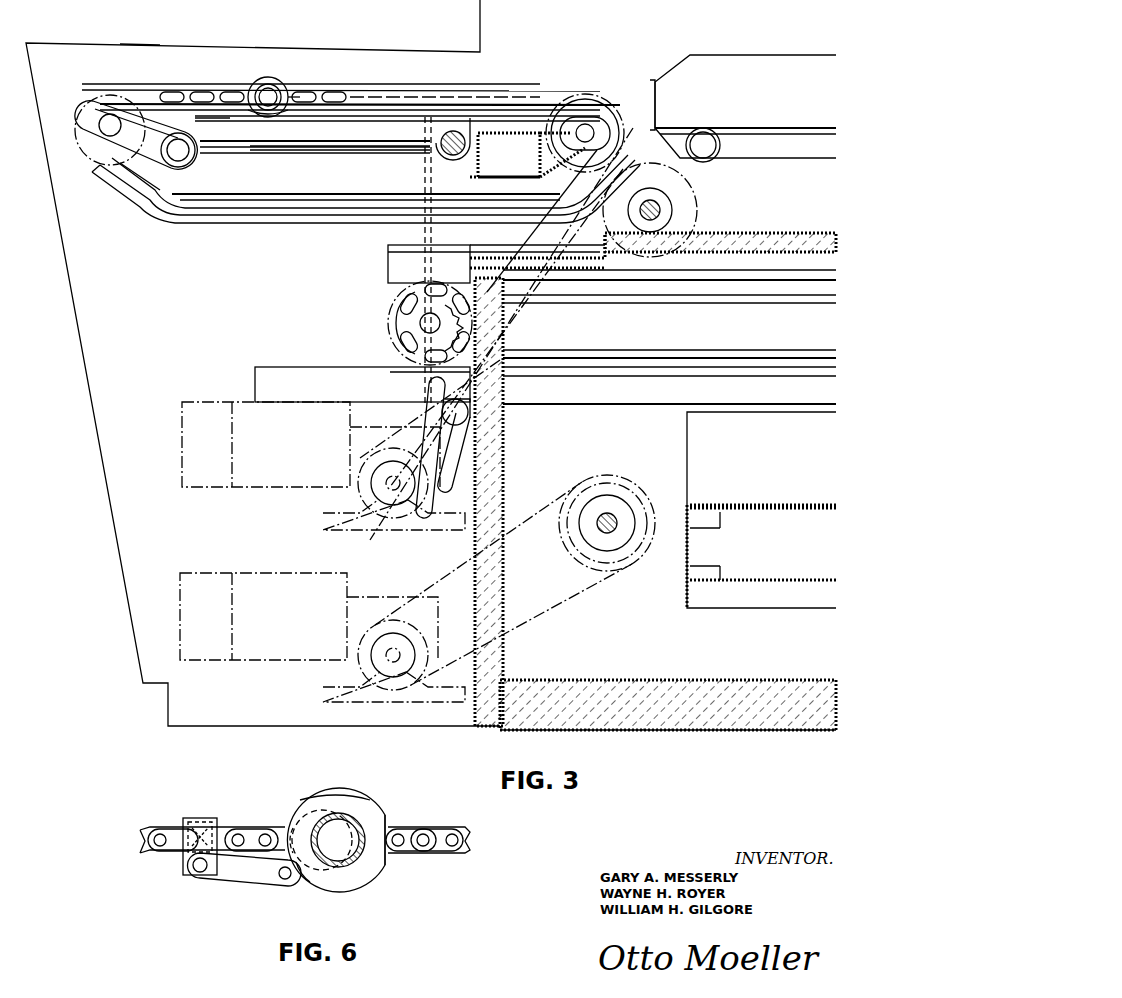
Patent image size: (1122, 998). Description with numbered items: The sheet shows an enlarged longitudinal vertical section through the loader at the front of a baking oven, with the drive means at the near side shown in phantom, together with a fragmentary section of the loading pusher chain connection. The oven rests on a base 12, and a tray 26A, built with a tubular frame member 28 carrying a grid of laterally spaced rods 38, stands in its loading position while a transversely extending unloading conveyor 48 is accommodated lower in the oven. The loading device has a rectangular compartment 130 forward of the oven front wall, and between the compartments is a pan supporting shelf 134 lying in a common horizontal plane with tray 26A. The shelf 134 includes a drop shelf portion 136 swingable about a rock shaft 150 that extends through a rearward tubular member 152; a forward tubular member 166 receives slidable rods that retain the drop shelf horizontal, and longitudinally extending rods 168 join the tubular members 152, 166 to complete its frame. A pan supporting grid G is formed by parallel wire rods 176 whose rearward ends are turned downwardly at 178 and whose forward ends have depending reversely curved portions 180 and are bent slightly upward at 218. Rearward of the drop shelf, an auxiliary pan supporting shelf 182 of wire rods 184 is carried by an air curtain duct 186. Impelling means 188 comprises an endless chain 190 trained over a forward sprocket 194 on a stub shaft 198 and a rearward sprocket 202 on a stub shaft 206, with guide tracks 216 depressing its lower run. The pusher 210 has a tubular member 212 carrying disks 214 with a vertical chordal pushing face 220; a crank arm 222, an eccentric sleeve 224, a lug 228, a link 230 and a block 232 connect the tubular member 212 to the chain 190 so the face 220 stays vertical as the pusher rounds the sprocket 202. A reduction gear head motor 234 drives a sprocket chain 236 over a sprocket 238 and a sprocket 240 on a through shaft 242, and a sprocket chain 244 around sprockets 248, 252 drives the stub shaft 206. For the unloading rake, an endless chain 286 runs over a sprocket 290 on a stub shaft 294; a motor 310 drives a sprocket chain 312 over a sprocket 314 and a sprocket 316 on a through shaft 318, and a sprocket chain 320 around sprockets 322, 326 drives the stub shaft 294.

In FIG. 3, the base 12 is at (698, 738).
In FIG. 3, the tray 26A is at (728, 42).
In FIG. 3, the tubular frame member 28 is at (718, 150).
In FIG. 3, the rods 38 is at (808, 130).
In FIG. 3, the unloading conveyor 48 is at (780, 505).
In FIG. 3, the compartment 130 is at (138, 45).
In FIG. 3, the pan supporting shelf 134 is at (300, 120).
In FIG. 3, the drop shelf portion 136 is at (374, 123).
In FIG. 3, the rock shaft 150 is at (453, 128).
In FIG. 3, the rearward tubular member 152 is at (445, 152).
In FIG. 3, the forward tubular member 166 is at (165, 163).
In FIG. 3, the rods 168 is at (250, 152).
In FIG. 3, the wire rods 176 is at (340, 122).
In FIG. 3, the downwardly turned rearward ends 178 is at (455, 156).
In FIG. 3, the depending reversely curved portions 180 is at (120, 144).
In FIG. 3, the auxiliary pan supporting shelf 182 is at (570, 120).
In FIG. 3, the wire rods 184 is at (582, 120).
In FIG. 3, the air curtain duct 186 is at (520, 130).
In FIG. 3, the impelling means 188 is at (190, 66).
In FIG. 3, the endless chain 190 is at (335, 95).
In FIG. 6, the endless chain 190 is at (418, 852).
In FIG. 3, the sprocket 194 is at (132, 152).
In FIG. 3, the stub shaft 198 is at (108, 118).
In FIG. 3, the sprocket 202 is at (565, 160).
In FIG. 3, the stub shaft 206 is at (590, 128).
In FIG. 3, the pusher 210 is at (268, 70).
In FIG. 6, the pusher 210 is at (338, 771).
In FIG. 3, the tubular member 212 is at (262, 92).
In FIG. 6, the tubular member 212 is at (346, 864).
In FIG. 3, the disks 214 is at (286, 90).
In FIG. 6, the disks 214 is at (356, 792).
In FIG. 3, the guide tracks 216 is at (158, 220).
In FIG. 3, the upwardly bent forward end portions 218 is at (140, 113).
In FIG. 3, the vertical chordal pushing face 220 is at (300, 92).
In FIG. 6, the vertical chordal pushing face 220 is at (388, 830).
In FIG. 6, the crank arm 222 is at (318, 818).
In FIG. 6, the sleeve 224 is at (296, 822).
In FIG. 6, the lug 228 is at (303, 870).
In FIG. 6, the link 230 is at (248, 878).
In FIG. 6, the block 232 is at (183, 860).
In FIG. 3, the reduction gear head motor 234 is at (306, 488).
In FIG. 3, the sprocket chain 236 is at (598, 327).
In FIG. 3, the sprocket 238 is at (388, 493).
In FIG. 3, the sprocket 240 is at (697, 193).
In FIG. 3, the through shaft 242 is at (663, 210).
In FIG. 3, the sprocket chain 244 is at (650, 82).
In FIG. 3, the sprocket 248 is at (665, 197).
In FIG. 3, the sprocket 252 is at (660, 170).
In FIG. 3, the endless chain 286 is at (395, 307).
In FIG. 3, the sprocket 290 is at (420, 322).
In FIG. 3, the stub shaft 294 is at (415, 326).
In FIG. 3, the reduction gear head motor 310 is at (296, 660).
In FIG. 3, the sprocket chain 312 is at (522, 620).
In FIG. 3, the sprocket 314 is at (400, 680).
In FIG. 3, the sprocket 316 is at (580, 560).
In FIG. 3, the through shaft 318 is at (610, 512).
In FIG. 3, the sprocket chain 320 is at (566, 428).
In FIG. 3, the sprocket 322 is at (597, 465).
In FIG. 3, the sprocket 326 is at (395, 290).
In FIG. 3, the pan supporting grid G is at (218, 122).